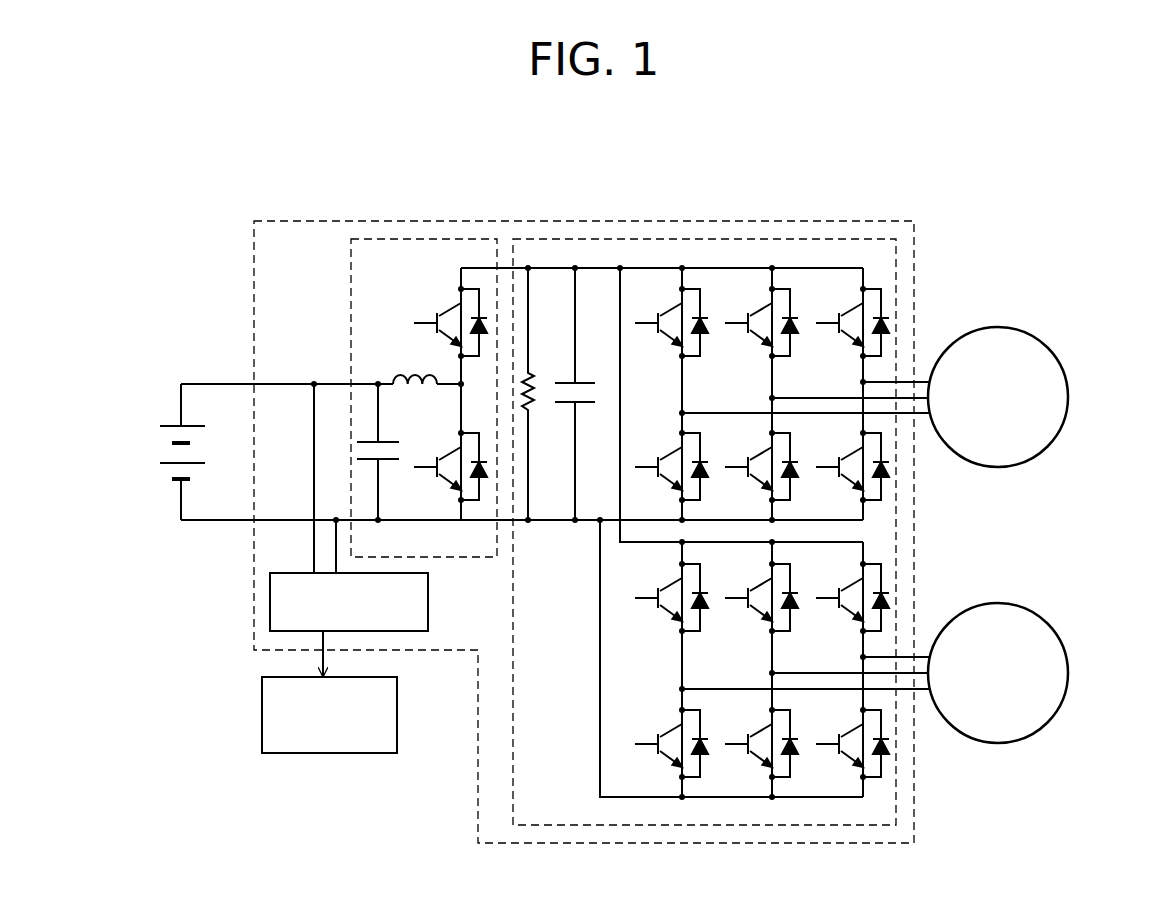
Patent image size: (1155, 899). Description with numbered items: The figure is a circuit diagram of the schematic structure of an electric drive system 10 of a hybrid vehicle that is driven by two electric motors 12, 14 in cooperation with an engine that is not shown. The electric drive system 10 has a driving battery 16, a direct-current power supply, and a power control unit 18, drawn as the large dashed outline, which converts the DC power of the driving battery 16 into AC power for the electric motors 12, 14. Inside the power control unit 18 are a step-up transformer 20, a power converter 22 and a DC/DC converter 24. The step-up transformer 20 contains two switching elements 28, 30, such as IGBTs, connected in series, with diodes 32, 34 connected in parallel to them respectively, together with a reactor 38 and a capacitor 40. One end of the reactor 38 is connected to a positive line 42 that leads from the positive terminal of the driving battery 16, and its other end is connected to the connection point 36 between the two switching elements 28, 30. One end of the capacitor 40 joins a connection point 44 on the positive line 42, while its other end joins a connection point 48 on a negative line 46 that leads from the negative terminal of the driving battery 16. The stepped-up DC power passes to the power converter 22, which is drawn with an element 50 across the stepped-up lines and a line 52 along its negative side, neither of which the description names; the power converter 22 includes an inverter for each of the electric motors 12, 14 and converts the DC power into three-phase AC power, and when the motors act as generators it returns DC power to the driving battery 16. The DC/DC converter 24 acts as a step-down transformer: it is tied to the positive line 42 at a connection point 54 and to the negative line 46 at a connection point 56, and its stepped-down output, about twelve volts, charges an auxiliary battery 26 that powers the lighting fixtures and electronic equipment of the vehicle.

The electric drive system 10 is at (960, 221).
The electric motor 12 is at (1048, 347).
The electric motor 14 is at (1048, 623).
The driving battery 16 is at (160, 462).
The power control unit 18 is at (667, 220).
The step-up transformer 20 is at (408, 237).
The power converter 22 is at (738, 238).
The DC/DC converter 24 is at (270, 606).
The auxiliary battery 26 is at (262, 714).
The switching element 28 is at (445, 300).
The switching element 30 is at (440, 452).
The diode 32 is at (482, 292).
The diode 34 is at (485, 485).
The connection point 36 is at (462, 387).
The reactor 38 is at (412, 376).
The capacitor 40 is at (385, 462).
The positive line 42 is at (215, 384).
The connection point 44 is at (378, 384).
The negative line 46 is at (215, 520).
The connection point 48 is at (380, 521).
The smoothing capacitor 50 is at (550, 270).
The negative bus line 52 is at (545, 522).
The connection point 54 is at (314, 384).
The connection point 56 is at (336, 520).